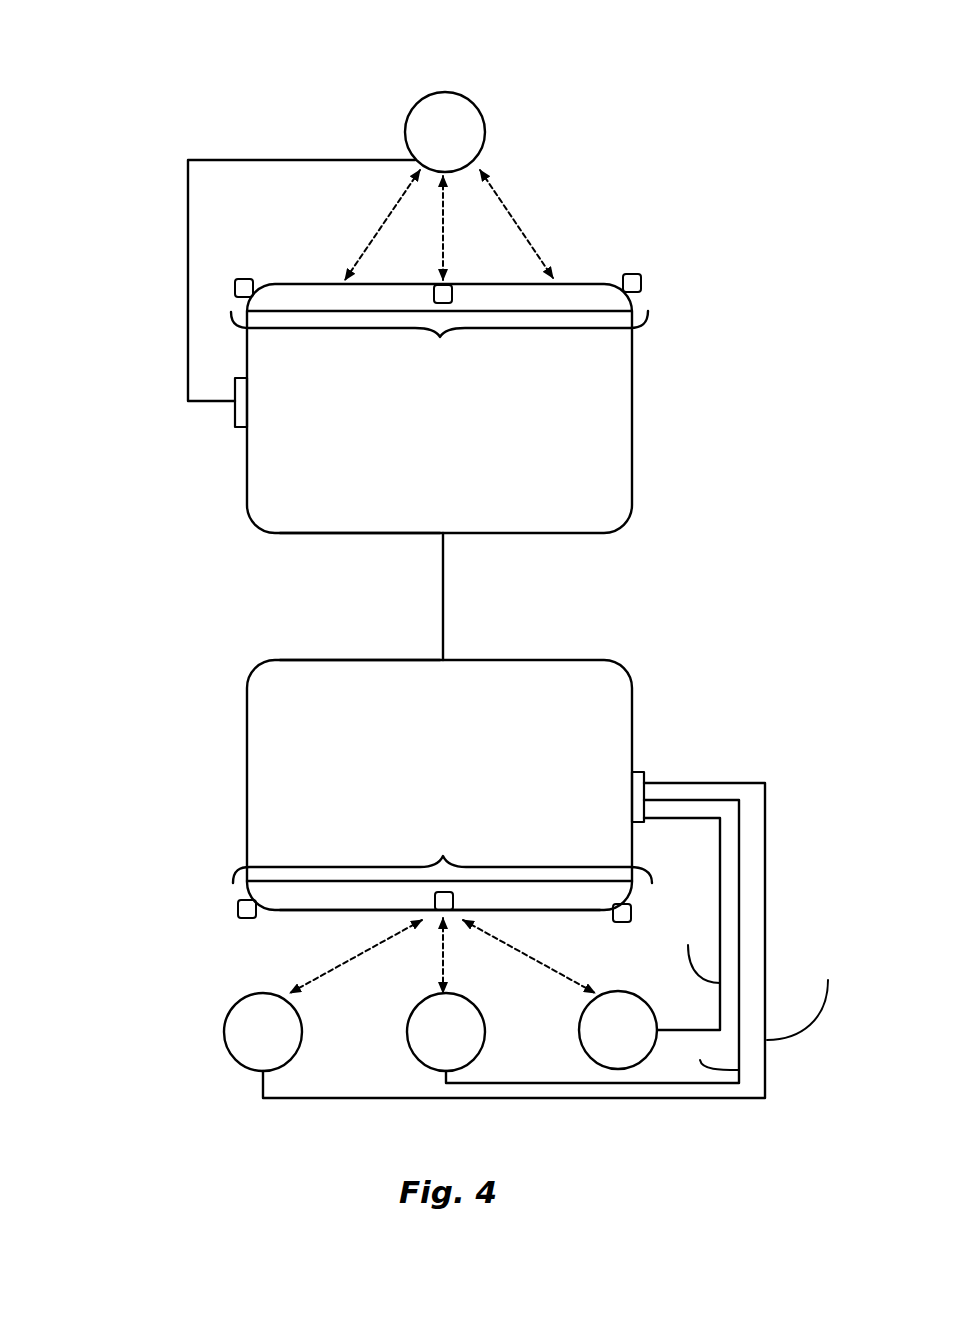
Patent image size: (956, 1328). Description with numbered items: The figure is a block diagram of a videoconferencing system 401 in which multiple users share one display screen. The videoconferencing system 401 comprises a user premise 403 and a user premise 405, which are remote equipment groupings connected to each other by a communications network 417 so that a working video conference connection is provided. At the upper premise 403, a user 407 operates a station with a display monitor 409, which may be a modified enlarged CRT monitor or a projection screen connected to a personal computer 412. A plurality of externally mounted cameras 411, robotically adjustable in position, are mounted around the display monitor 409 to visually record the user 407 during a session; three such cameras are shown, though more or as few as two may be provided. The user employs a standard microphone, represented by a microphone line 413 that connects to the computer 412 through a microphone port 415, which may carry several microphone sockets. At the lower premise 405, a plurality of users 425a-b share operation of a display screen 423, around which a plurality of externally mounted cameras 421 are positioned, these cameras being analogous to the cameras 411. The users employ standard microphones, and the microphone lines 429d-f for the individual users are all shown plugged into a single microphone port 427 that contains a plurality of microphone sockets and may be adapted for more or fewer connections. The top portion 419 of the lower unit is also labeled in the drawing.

The videoconferencing system 401 is at (150, 597).
The user premise 403 is at (437, 391).
The user premise 405 is at (399, 785).
The user 407 is at (406, 133).
The display monitor 409 is at (330, 285).
The externally mounted cameras 411 is at (441, 346).
The personal computer 412 is at (372, 535).
The microphone line 413 is at (188, 262).
The microphone port 415 is at (235, 414).
The communications network 417 is at (443, 577).
The top portion of second unit 419 is at (398, 660).
The externally mounted cameras 421 is at (442, 847).
The display screen 423 is at (330, 912).
The users 425a-b is at (218, 1030).
The microphone port 427 is at (646, 778).
The cable connections d, e, f 429d-f is at (775, 849).